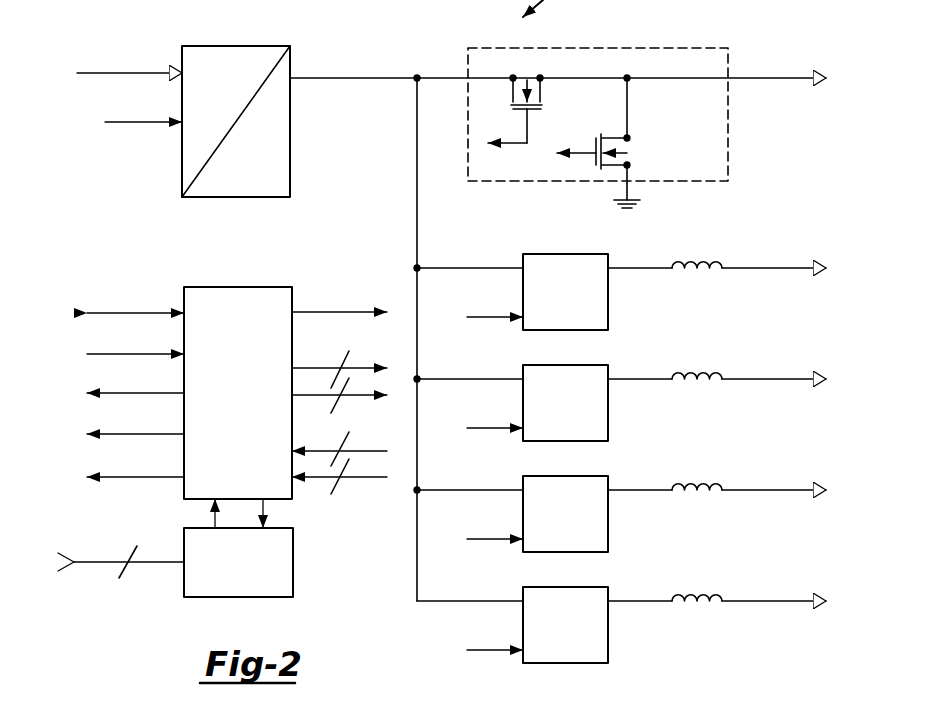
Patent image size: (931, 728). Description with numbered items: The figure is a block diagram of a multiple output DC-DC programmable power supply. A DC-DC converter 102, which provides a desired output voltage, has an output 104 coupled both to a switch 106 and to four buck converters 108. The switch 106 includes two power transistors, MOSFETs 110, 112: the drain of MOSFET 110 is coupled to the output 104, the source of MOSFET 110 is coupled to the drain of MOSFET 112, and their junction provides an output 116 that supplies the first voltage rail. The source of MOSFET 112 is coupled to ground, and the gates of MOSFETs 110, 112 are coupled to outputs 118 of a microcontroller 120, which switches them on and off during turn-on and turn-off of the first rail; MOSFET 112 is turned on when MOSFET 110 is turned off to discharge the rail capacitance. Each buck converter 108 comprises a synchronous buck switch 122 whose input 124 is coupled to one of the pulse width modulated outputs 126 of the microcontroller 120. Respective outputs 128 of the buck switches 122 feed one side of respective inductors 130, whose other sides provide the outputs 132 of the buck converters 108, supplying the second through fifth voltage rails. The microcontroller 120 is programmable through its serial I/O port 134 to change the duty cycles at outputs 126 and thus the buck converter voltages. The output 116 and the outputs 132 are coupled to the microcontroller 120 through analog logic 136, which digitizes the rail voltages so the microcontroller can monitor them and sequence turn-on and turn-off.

The DC-DC converter 102 is at (291, 122).
The output 104 is at (291, 78).
The switch 106 is at (670, 48).
The buck converters 108 is at (634, 248).
The MOSFET 110 is at (542, 101).
The MOSFET 112 is at (623, 154).
The output 116 is at (833, 86).
The outputs 118 is at (292, 398).
The microcontroller 120 is at (253, 287).
The synchronous buck switch 122 is at (545, 254).
The input 124 is at (492, 318).
The outputs 126 is at (292, 370).
The outputs 128 is at (608, 274).
The inductors 130 is at (704, 259).
The outputs 132 is at (58, 571).
The serial I/O port 134 is at (184, 313).
The analog logic 136 is at (293, 577).